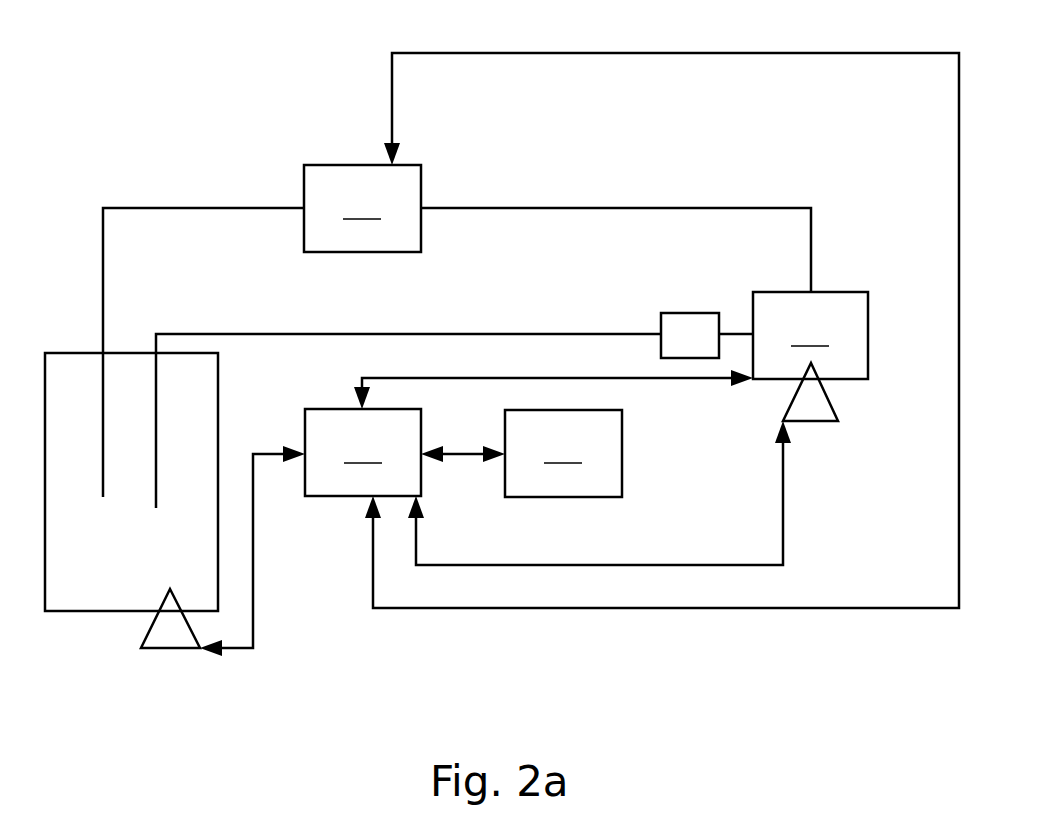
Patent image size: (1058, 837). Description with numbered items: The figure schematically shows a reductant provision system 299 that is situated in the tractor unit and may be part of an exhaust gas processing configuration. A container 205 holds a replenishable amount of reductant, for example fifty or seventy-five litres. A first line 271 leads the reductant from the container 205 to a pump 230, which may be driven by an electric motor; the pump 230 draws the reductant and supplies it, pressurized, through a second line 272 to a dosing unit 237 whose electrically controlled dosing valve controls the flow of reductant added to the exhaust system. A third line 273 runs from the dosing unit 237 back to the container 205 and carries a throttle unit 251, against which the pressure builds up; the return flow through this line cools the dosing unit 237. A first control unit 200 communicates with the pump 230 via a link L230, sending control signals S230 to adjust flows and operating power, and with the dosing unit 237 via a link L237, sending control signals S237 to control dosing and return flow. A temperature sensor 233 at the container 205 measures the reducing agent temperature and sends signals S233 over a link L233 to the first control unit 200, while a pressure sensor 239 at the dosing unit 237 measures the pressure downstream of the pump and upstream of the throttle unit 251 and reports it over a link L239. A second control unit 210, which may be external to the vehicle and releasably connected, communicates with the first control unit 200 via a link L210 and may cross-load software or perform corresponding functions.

The system 299 is at (292, 96).
The container 205 is at (72, 611).
The first line 271 is at (160, 208).
The second line 272 is at (558, 208).
The third line 273 is at (592, 334).
The pump 230 is at (362, 208).
The dosing unit 237 is at (810, 335).
The throttle unit 251 is at (690, 335).
The first control unit 200 is at (363, 452).
The second control unit 210 is at (563, 453).
The temperature sensor 233 is at (163, 648).
The pressure sensor 239 is at (838, 421).
The link L237 is at (505, 380).
The control signals S237 is at (348, 392).
The link L210 is at (460, 455).
The signals S233 is at (255, 551).
The link L233 is at (268, 574).
The link L239 is at (713, 565).
The link L230 is at (662, 366).
The control signals S230 is at (665, 608).